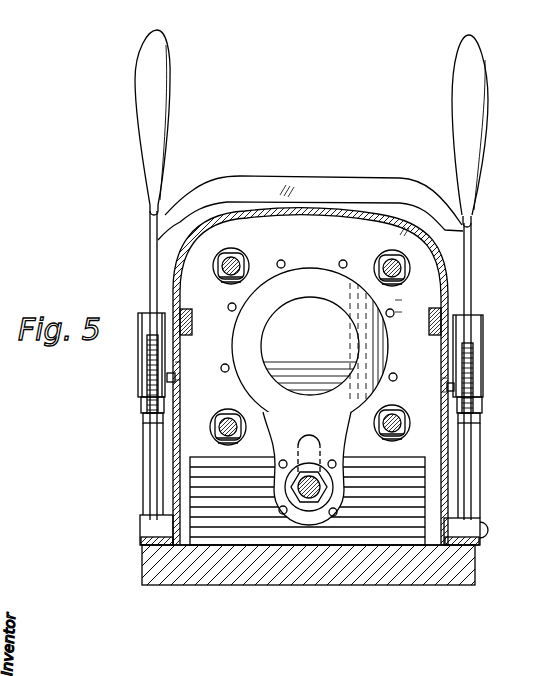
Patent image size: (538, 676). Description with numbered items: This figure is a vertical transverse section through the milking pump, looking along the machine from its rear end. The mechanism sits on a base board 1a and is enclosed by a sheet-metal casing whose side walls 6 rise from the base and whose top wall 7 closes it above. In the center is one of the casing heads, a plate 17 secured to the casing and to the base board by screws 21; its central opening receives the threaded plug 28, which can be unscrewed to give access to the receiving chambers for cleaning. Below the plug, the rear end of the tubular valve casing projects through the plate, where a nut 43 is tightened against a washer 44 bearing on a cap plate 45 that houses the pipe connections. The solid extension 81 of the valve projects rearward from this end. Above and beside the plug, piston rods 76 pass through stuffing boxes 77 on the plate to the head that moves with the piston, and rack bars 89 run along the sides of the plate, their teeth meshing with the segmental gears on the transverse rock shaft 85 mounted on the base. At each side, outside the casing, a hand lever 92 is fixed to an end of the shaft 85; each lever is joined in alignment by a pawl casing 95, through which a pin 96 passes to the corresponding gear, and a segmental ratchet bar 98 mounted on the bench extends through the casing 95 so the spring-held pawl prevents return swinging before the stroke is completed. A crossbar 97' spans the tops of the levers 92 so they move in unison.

The base board 1a is at (345, 580).
The side walls 6 is at (191, 304).
The top wall 7 is at (322, 208).
The plate 17 is at (206, 404).
The screws 21 is at (221, 370).
The plug 28 is at (312, 282).
The nut 43 is at (308, 510).
The washer 44 is at (326, 500).
The cap plate 45 is at (295, 443).
The piston rods 76 is at (396, 416).
The stuffing boxes 77 is at (390, 251).
The solid extension 81 is at (292, 487).
The rock shaft 85 is at (483, 530).
The rack bars 89 is at (431, 330).
The hand levers 92 is at (167, 160).
The pawl casing 95 is at (142, 318).
The pin 96 is at (178, 370).
The crossbar 97' is at (313, 178).
The segmental ratchet bar 98 is at (151, 373).